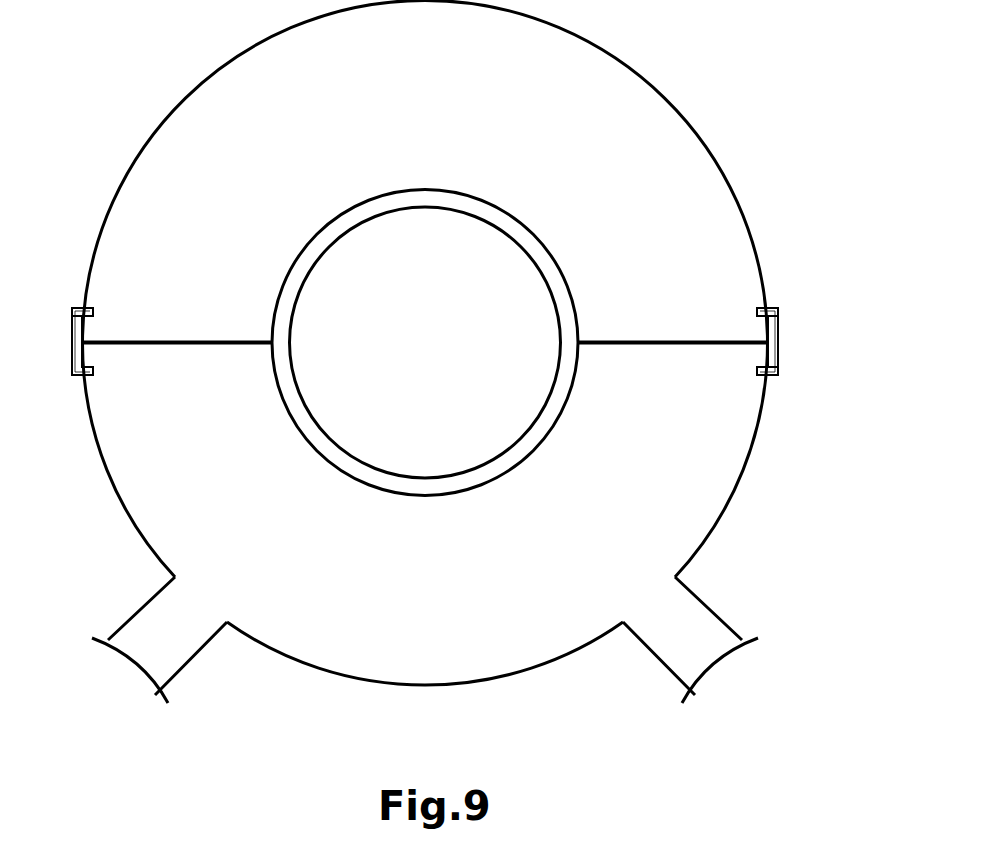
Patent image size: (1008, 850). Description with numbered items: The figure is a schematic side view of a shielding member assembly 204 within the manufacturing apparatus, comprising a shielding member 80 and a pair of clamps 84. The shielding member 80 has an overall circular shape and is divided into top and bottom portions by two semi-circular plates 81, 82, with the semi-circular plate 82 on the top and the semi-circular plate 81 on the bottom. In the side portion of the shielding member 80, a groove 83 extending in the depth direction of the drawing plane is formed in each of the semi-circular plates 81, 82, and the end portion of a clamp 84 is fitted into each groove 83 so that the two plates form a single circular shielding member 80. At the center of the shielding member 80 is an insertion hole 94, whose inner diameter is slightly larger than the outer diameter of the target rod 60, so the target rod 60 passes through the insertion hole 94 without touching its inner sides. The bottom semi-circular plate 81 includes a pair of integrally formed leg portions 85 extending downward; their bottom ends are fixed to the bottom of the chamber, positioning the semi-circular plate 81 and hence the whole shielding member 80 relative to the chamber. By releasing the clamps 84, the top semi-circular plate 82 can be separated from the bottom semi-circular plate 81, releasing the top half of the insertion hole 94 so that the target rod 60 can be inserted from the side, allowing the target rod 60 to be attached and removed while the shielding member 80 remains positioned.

The shielding member assembly 204 is at (113, 40).
The target rod 60 is at (423, 207).
The insertion hole 94 is at (518, 460).
The shielding member 80 is at (733, 343).
The semi-circular plate 81 is at (795, 403).
The semi-circular plate 82 is at (768, 288).
The groove 83 is at (90, 308).
The clamp 84 is at (75, 308).
The leg portion 85 is at (142, 607).